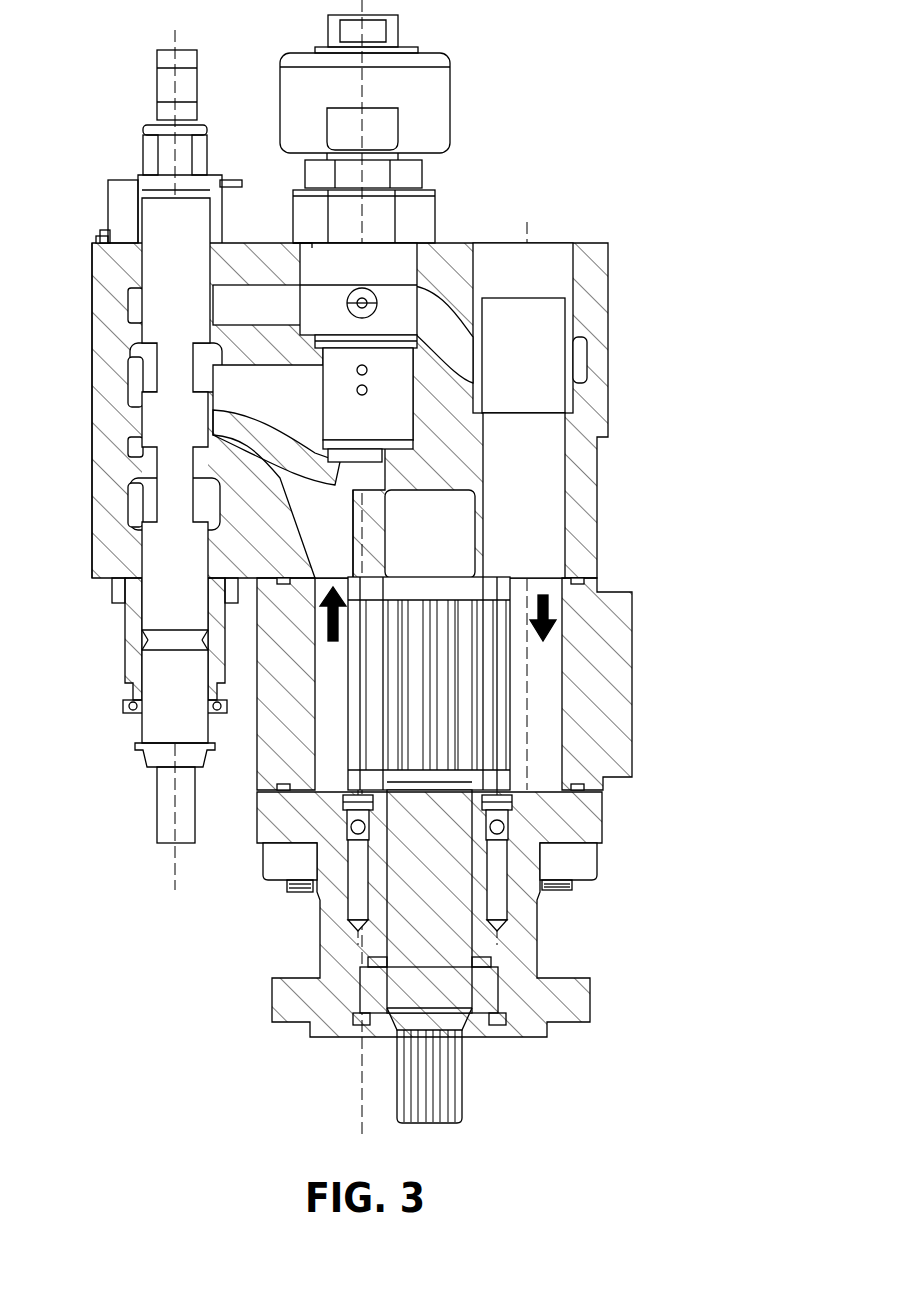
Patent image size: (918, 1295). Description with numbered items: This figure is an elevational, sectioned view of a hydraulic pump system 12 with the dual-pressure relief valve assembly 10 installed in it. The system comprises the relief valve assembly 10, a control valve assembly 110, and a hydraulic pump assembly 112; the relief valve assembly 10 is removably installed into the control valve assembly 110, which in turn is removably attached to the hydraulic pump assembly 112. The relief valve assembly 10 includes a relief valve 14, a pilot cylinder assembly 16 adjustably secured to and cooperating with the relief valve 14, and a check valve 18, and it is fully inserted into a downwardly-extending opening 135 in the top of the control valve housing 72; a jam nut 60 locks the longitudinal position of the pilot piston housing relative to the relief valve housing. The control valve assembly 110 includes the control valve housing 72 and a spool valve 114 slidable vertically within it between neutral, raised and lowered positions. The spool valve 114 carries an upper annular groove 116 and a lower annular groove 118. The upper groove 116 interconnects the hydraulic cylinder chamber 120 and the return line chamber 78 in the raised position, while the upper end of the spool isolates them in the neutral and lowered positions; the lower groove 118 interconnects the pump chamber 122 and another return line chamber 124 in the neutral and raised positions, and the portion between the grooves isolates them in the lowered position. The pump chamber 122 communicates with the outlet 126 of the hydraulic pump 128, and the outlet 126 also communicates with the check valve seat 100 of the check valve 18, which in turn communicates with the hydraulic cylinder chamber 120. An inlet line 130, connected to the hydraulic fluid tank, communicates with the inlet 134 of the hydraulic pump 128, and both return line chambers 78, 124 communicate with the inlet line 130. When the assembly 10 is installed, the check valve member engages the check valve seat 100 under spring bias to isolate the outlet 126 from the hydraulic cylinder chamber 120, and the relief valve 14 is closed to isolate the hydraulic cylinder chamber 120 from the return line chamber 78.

The dual-pressure relief valve assembly 10 is at (457, 97).
The hydraulic pump system 12 is at (608, 166).
The relief valve 14 is at (437, 206).
The pilot cylinder assembly 16 is at (452, 76).
The check valve 18 is at (385, 440).
The jam nut 60 is at (437, 172).
The control valve housing 72 is at (88, 407).
The return line chamber 78 is at (128, 302).
The check valve seat 100 is at (372, 460).
The control valve assembly 110 is at (614, 331).
The hydraulic pump assembly 112 is at (637, 681).
The spool valve 114 is at (152, 808).
The upper annular groove 116 is at (140, 355).
The lower annular groove 118 is at (128, 497).
The hydraulic cylinder chamber 120 is at (128, 377).
The pump chamber 122 is at (128, 444).
The return line chamber 124 is at (136, 526).
The outlet 126 is at (347, 578).
The hydraulic pump 128 is at (500, 702).
The inlet line 130 is at (572, 262).
The inlet 134 is at (555, 578).
The downwardly-extending opening 135 is at (300, 245).